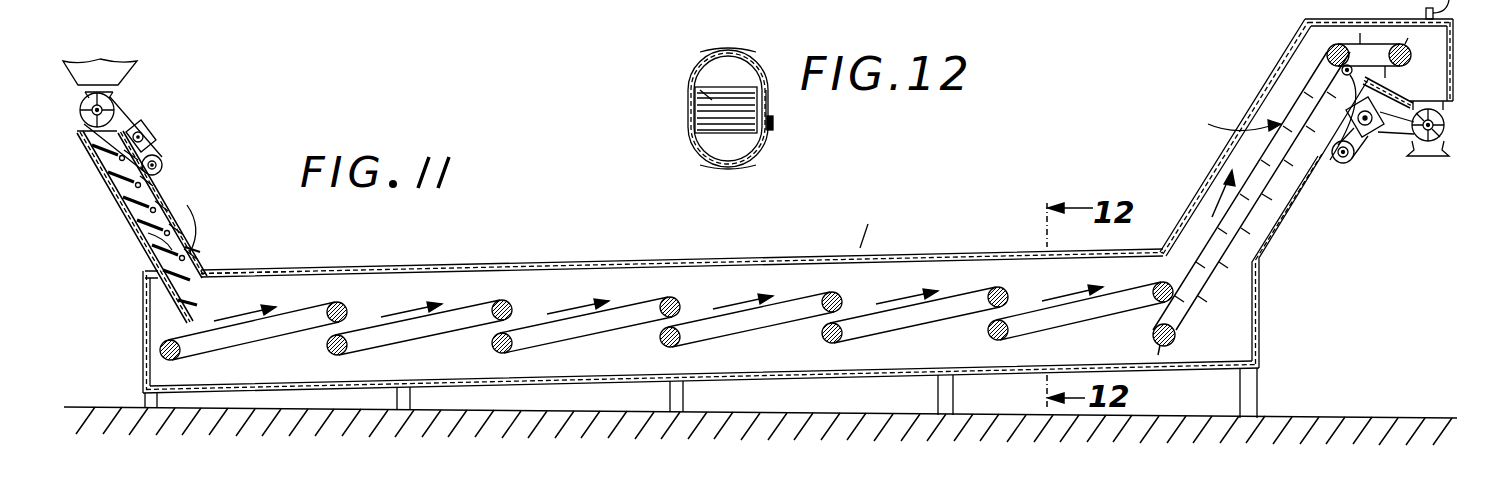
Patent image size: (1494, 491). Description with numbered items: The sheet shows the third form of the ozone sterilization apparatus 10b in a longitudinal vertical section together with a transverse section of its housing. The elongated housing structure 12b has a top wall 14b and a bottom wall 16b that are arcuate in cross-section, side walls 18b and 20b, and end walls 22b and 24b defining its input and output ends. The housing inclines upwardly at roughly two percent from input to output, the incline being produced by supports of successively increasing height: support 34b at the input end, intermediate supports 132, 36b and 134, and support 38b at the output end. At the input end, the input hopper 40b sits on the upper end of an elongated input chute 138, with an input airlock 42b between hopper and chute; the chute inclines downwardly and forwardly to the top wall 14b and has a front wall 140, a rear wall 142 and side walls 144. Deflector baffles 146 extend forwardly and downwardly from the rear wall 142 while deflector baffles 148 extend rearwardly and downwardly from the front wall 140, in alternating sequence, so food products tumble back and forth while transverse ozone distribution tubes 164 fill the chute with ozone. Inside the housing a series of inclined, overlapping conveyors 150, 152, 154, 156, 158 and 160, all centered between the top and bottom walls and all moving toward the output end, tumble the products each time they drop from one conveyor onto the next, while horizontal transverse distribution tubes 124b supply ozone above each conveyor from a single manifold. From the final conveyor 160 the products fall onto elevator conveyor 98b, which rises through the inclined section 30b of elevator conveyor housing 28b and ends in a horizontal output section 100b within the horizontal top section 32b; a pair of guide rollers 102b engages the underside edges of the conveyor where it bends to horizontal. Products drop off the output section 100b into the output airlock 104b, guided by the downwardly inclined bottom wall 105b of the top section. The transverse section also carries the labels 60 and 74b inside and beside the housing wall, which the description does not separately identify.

In FIG. 11, the ozone sterilization apparatus 10b is at (858, 253).
In FIG. 11, the elongated housing structure 12b is at (524, 268).
In FIG. 12, the elongated housing structure 12b is at (685, 138).
In FIG. 11, the top wall 14b is at (718, 264).
In FIG. 12, the top wall 14b is at (742, 51).
In FIG. 11, the bottom wall 16b is at (507, 387).
In FIG. 12, the bottom wall 16b is at (727, 166).
In FIG. 12, the side wall 18b is at (694, 99).
In FIG. 12, the side wall 20b is at (770, 100).
In FIG. 11, the end wall 22b is at (143, 318).
In FIG. 11, the end wall 24b is at (1259, 337).
In FIG. 11, the elevator conveyor housing 28b is at (1291, 49).
In FIG. 11, the upwardly inclined section 30b is at (1270, 84).
In FIG. 11, the horizontal top section 32b is at (1337, 20).
In FIG. 11, the support 34b is at (143, 403).
In FIG. 11, the intermediate support 36b is at (683, 397).
In FIG. 11, the support 38b is at (1259, 396).
In FIG. 11, the input hopper 40b is at (133, 62).
In FIG. 11, the input airlock 42b is at (118, 97).
In FIG. 12, the heater elements 60 is at (703, 123).
In FIG. 12, the connector 74b is at (774, 126).
In FIG. 11, the elevator conveyor 98b is at (1251, 203).
In FIG. 11, the horizontal output section 100b is at (1380, 47).
In FIG. 11, the guide rollers 102b is at (1314, 158).
In FIG. 11, the output airlock 104b is at (1450, 150).
In FIG. 11, the bottom wall 105b is at (1388, 94).
In FIG. 11, the distribution tubes 124b is at (244, 300).
In FIG. 11, the intermediate support 132 is at (404, 397).
In FIG. 11, the intermediate support 134 is at (938, 396).
In FIG. 11, the input chute 138 is at (155, 184).
In FIG. 11, the front wall 140 is at (193, 254).
In FIG. 11, the rear wall 142 is at (150, 268).
In FIG. 11, the side walls 144 is at (118, 196).
In FIG. 11, the deflector baffles 146 is at (128, 217).
In FIG. 11, the deflector baffles 148 is at (143, 243).
In FIG. 11, the conveyor 150 is at (334, 306).
In FIG. 11, the conveyor 152 is at (497, 305).
In FIG. 11, the conveyor 154 is at (666, 300).
In FIG. 11, the conveyor 156 is at (828, 296).
In FIG. 11, the conveyor 158 is at (992, 292).
In FIG. 12, the conveyor 158 is at (706, 90).
In FIG. 11, the conveyor 160 is at (1152, 288).
In FIG. 11, the ozone distribution tubes 164 is at (186, 210).